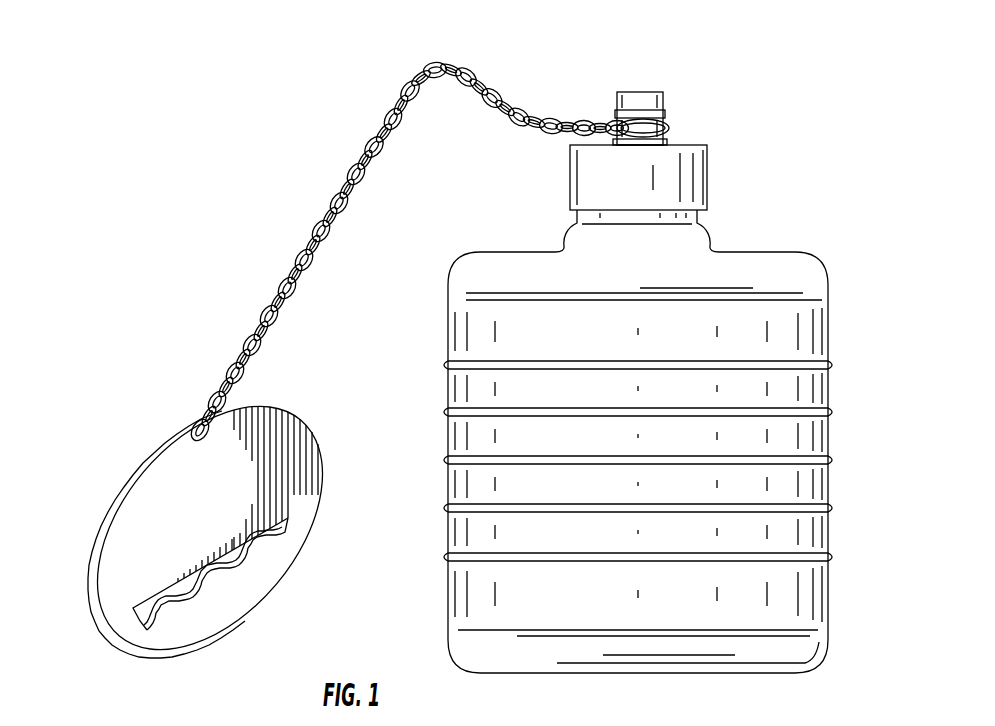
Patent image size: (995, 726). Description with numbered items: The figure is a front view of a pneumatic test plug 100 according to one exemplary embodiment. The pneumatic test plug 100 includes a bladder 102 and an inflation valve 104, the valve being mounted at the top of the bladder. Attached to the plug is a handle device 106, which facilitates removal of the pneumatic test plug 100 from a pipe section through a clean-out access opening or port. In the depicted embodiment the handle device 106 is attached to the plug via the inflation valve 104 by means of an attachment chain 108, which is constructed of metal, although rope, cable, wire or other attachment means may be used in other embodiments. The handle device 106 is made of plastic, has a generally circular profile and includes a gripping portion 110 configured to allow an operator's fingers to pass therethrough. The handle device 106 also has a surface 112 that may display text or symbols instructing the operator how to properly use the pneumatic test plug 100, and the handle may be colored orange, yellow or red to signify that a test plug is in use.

The pneumatic test plug 100 is at (699, 60).
The bladder 102 is at (847, 274).
The inflation valve 104 is at (691, 132).
The handle device 106 is at (192, 532).
The attachment chain 108 is at (285, 190).
The gripping portion 110 is at (182, 600).
The surface 112 is at (131, 546).